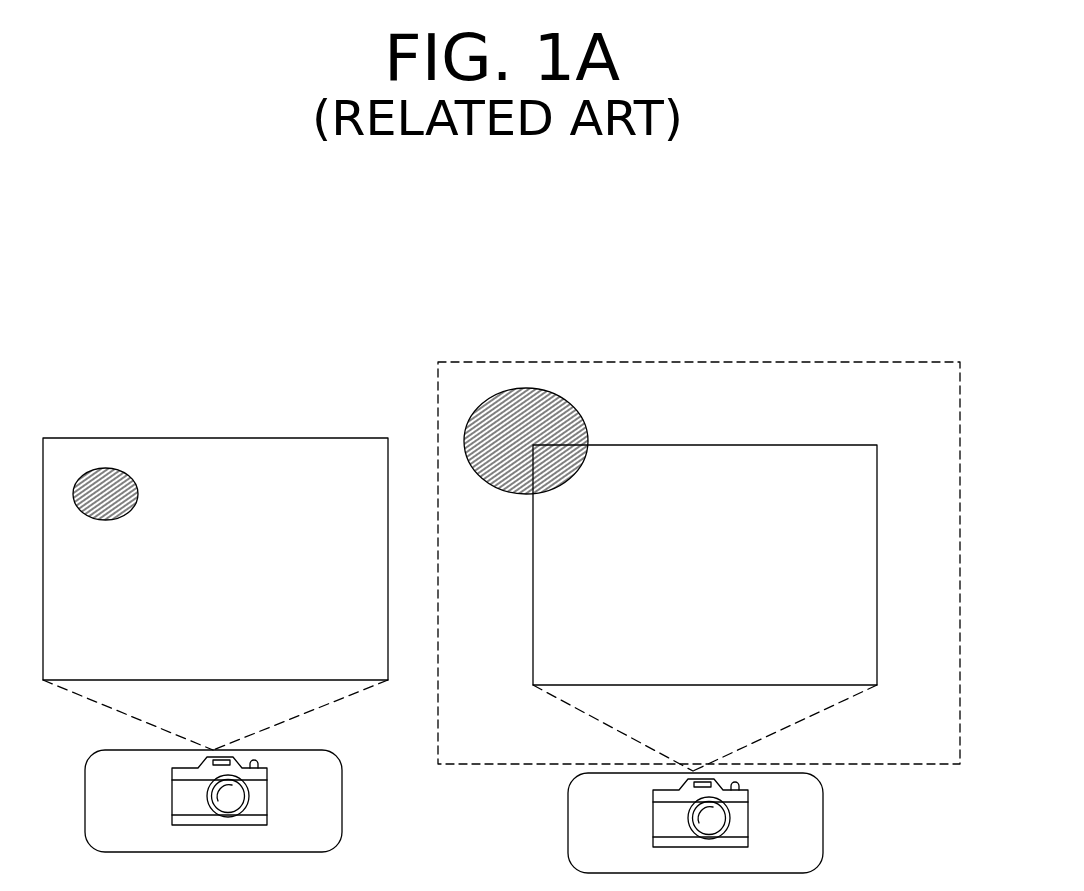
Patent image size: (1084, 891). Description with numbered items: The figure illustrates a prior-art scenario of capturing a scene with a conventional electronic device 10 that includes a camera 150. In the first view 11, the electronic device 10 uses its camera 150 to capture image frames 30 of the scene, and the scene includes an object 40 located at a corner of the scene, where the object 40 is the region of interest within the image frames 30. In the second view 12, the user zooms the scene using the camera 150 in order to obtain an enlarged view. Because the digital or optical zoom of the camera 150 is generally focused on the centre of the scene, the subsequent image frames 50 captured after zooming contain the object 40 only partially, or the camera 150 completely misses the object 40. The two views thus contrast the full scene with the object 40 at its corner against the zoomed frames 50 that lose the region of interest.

The electronic device 10 is at (131, 812).
The first scenario view 11 is at (289, 407).
The second scenario view 12 is at (715, 343).
The image frames 30 is at (182, 445).
The object 40 is at (100, 467).
The subsequent image frames 50 is at (723, 445).
The camera 150 is at (263, 800).